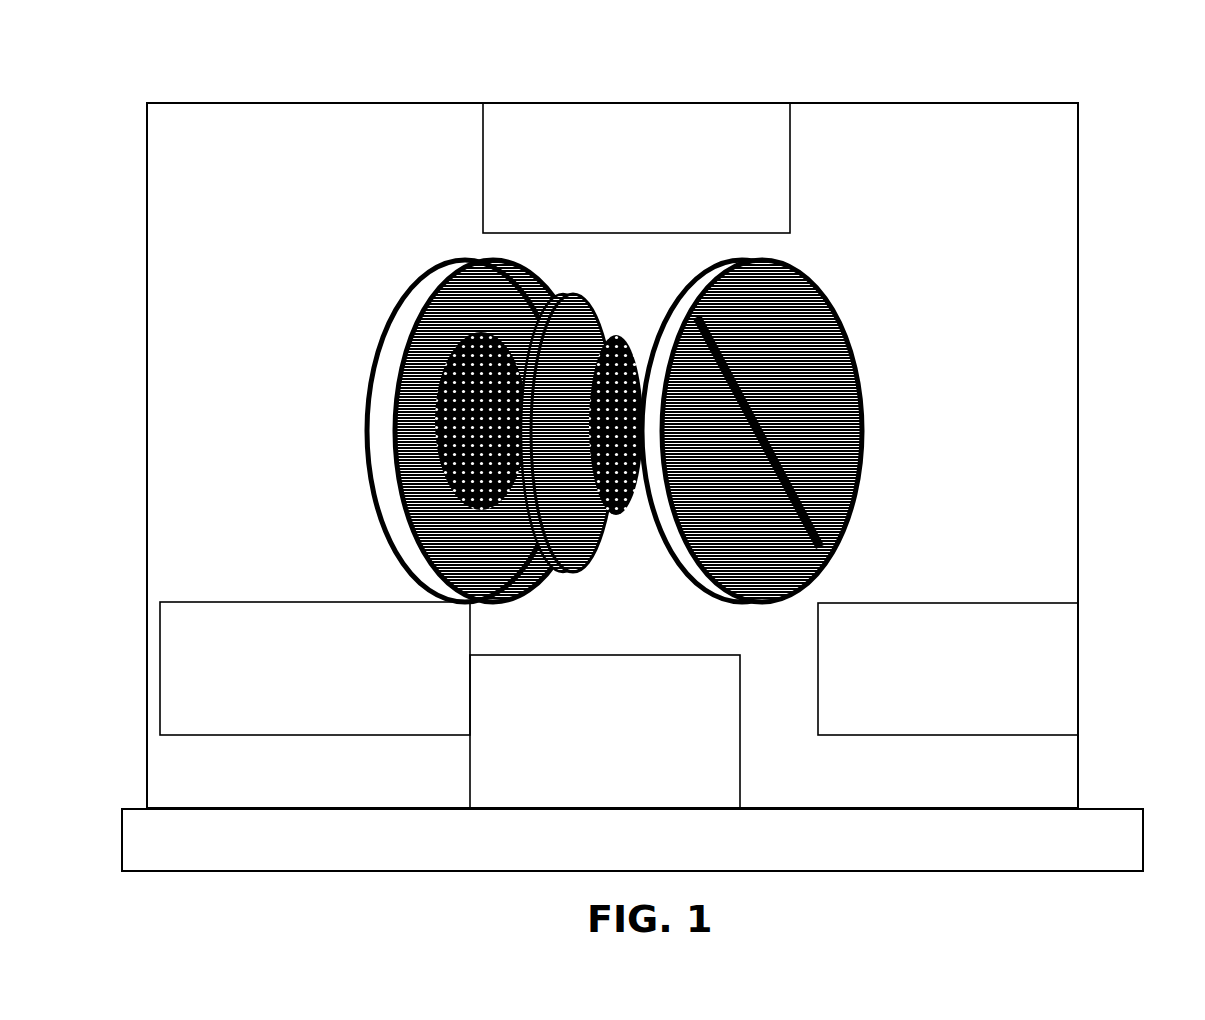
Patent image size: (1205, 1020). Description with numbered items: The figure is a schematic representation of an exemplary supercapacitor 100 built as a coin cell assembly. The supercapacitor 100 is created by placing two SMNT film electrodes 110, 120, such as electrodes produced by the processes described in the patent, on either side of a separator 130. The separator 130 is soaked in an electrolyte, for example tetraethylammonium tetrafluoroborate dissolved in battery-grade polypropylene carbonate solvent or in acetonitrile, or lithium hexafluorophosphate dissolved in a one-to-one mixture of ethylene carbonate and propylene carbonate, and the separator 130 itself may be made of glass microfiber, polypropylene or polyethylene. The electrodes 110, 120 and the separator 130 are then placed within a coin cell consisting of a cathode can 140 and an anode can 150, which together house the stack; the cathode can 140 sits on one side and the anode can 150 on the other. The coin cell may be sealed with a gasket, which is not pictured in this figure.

The supercapacitor 100 is at (885, 249).
The SMNT film electrode 110 is at (515, 316).
The SMNT film electrode 120 is at (633, 319).
The separator 130 is at (598, 586).
The cathode can 140 is at (386, 579).
The anode can 150 is at (783, 557).